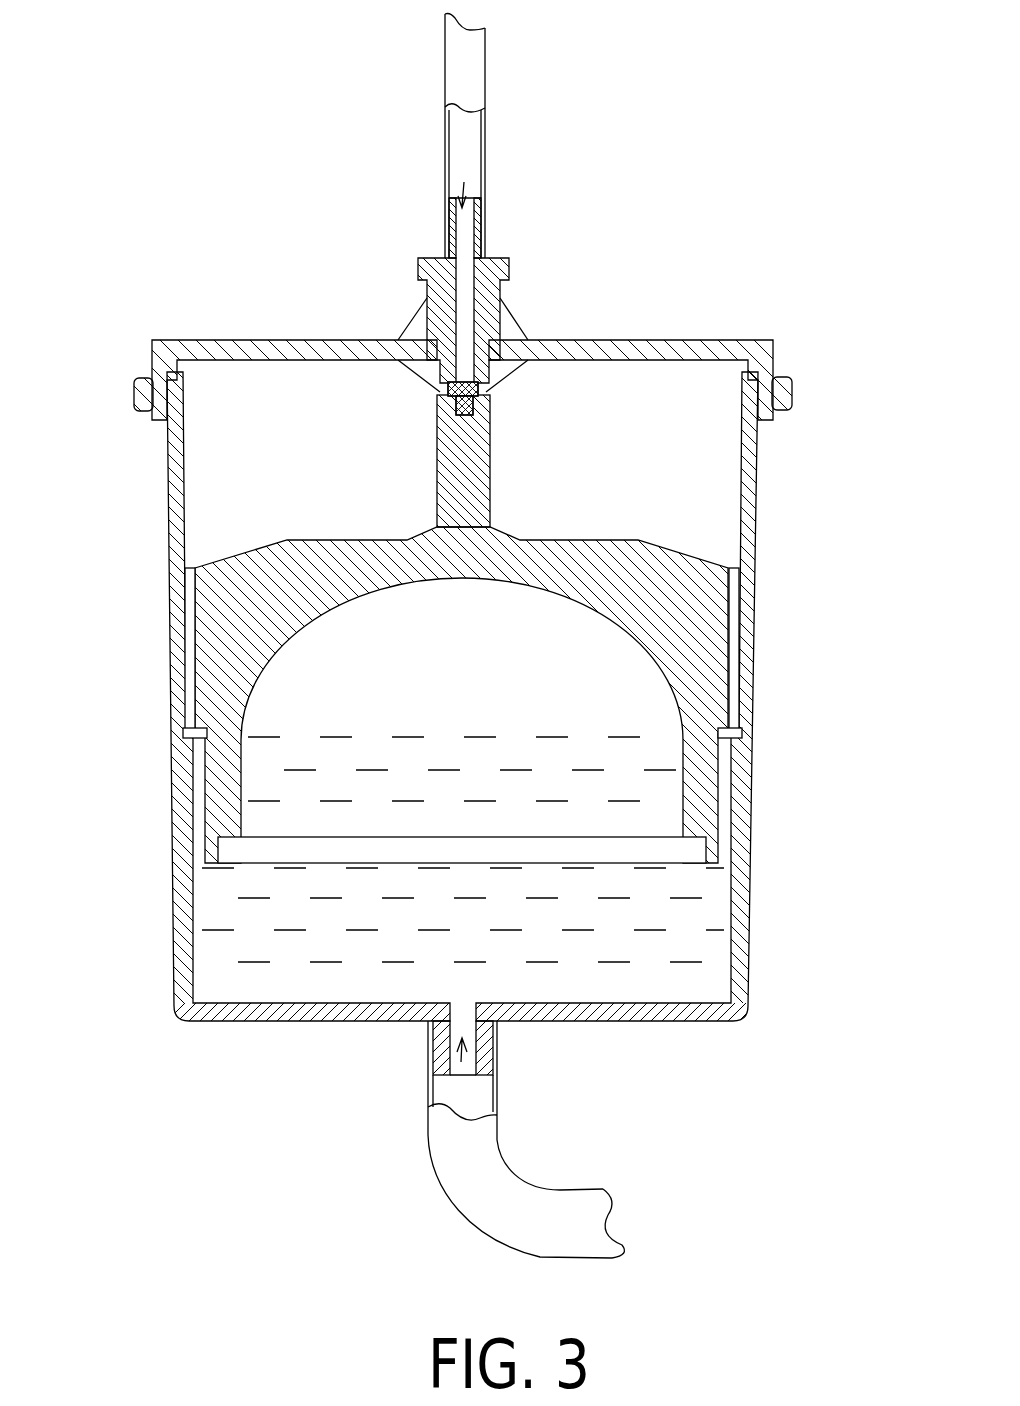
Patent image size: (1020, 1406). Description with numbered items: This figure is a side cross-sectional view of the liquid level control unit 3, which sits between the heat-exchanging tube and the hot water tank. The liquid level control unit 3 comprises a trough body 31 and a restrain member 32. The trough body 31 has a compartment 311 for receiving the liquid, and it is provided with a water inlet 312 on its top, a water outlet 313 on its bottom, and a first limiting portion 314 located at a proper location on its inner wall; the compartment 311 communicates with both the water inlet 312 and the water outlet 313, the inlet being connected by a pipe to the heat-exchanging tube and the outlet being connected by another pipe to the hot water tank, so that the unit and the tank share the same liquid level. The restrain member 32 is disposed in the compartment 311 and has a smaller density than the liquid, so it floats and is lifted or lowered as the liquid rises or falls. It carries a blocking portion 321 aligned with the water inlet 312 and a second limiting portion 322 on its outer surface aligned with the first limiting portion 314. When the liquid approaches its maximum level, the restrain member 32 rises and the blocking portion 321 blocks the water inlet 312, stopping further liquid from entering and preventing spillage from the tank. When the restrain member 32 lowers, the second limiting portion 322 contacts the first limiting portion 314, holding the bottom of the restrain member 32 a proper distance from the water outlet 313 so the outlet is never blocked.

The liquid level control unit 3 is at (777, 452).
The trough body 31 is at (655, 1015).
The compartment 311 is at (645, 380).
The water inlet 312 is at (465, 196).
The water outlet 313 is at (462, 1045).
The first limiting portion 314 is at (183, 727).
The restrain member 32 is at (712, 580).
The blocking portion 321 is at (490, 458).
The second limiting portion 322 is at (200, 738).